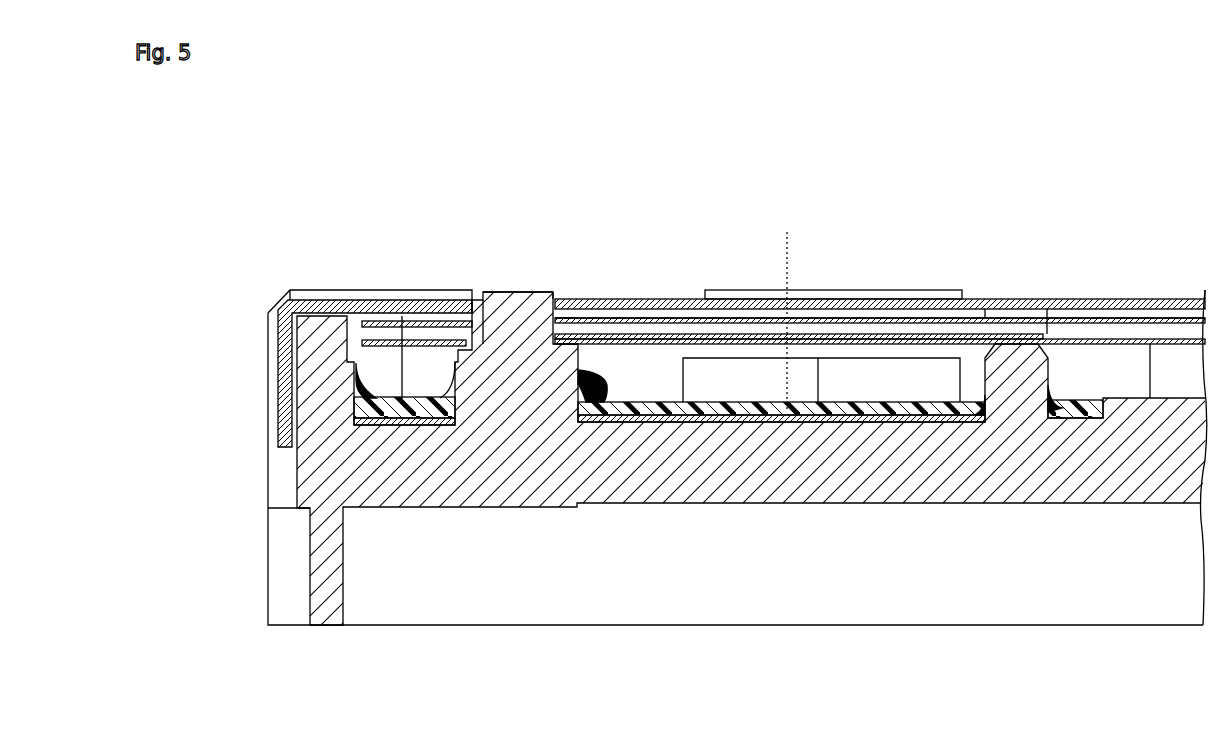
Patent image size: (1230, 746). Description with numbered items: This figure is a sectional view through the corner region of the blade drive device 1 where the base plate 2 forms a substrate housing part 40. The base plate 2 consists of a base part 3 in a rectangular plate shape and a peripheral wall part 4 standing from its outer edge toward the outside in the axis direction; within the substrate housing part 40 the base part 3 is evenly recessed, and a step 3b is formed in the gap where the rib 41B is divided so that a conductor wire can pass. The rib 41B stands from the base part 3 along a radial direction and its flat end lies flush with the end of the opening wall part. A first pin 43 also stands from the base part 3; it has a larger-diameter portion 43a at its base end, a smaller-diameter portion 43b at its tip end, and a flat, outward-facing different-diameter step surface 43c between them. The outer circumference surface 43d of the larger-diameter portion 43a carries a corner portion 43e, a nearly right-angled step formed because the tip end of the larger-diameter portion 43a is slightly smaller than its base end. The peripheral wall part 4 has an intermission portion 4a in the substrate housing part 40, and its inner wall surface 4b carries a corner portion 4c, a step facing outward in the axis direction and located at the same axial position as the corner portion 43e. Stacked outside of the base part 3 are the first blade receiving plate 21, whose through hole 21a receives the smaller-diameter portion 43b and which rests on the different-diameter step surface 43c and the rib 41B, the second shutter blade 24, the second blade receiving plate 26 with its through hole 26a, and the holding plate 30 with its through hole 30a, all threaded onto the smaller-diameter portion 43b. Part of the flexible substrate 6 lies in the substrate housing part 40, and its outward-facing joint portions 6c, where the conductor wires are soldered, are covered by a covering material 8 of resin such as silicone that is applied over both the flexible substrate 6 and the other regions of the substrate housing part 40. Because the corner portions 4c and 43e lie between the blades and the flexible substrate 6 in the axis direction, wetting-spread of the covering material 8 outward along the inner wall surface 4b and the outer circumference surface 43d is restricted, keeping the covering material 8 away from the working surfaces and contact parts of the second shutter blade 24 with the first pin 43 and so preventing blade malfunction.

The blade drive device 1 is at (275, 217).
The base plate 2 is at (266, 462).
The base part 3 is at (413, 498).
The step 3b is at (1103, 398).
The peripheral wall part 4 is at (300, 388).
The intermission portion 4a is at (683, 370).
The inner wall surface 4b is at (347, 302).
The corner portion 4c is at (352, 345).
The flexible substrate 6 is at (848, 400).
The joint portion 6c is at (785, 312).
The covering material 8 is at (735, 420).
The first blade receiving plate 21 is at (1073, 333).
The through hole 21a is at (470, 325).
The second shutter blade 24 is at (722, 338).
The second blade receiving plate 26 is at (1000, 314).
The through hole 26a is at (473, 343).
The holding plate 30 is at (948, 297).
The through hole 30a is at (475, 312).
The substrate housing part 40 is at (822, 220).
The rib 41B is at (1130, 350).
The first pin 43 is at (528, 287).
The larger-diameter portion 43a is at (540, 395).
The smaller-diameter portion 43b is at (541, 293).
The different-diameter step surface 43c is at (565, 341).
The outer circumference surface 43d is at (600, 400).
The corner portion 43e is at (583, 346).